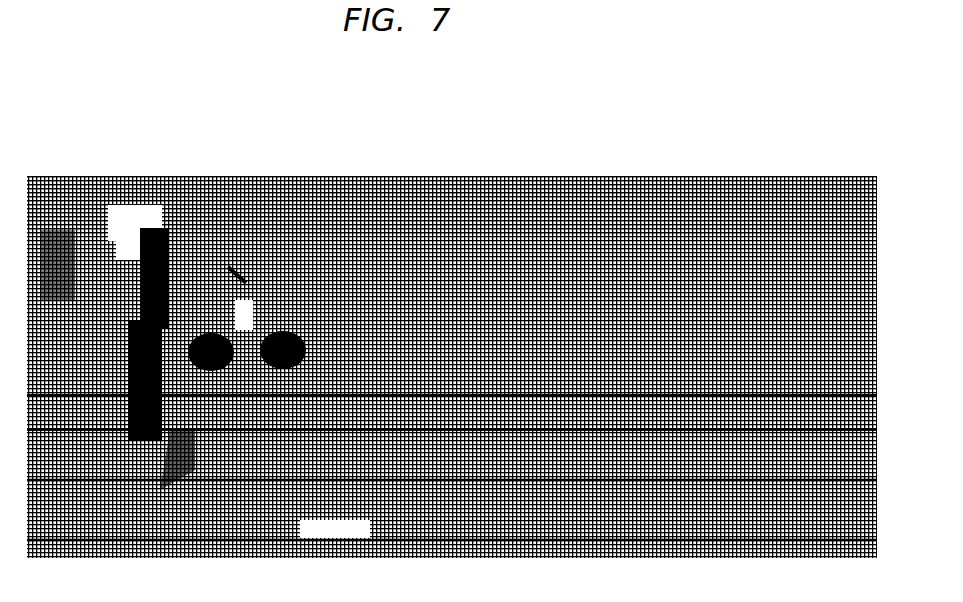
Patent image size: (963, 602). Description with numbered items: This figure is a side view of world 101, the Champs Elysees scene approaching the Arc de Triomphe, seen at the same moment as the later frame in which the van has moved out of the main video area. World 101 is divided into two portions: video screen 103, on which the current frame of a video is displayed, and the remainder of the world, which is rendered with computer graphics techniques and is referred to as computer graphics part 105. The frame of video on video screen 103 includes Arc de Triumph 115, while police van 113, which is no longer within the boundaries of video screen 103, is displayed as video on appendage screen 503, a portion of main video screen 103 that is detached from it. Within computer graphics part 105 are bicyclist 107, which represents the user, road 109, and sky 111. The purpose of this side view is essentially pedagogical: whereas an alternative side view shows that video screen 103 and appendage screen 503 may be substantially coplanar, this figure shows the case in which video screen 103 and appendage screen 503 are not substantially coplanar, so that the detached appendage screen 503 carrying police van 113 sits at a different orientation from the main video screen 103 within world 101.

The world 101 is at (636, 102).
The video screen 103 is at (147, 203).
The computer graphics part 105 is at (405, 174).
The bicyclist 107 is at (255, 300).
The road 109 is at (378, 490).
The sky 111 is at (69, 224).
The police van 113 is at (192, 437).
The Arc de Triumph 115 is at (162, 244).
The appendage screen 503 is at (187, 437).